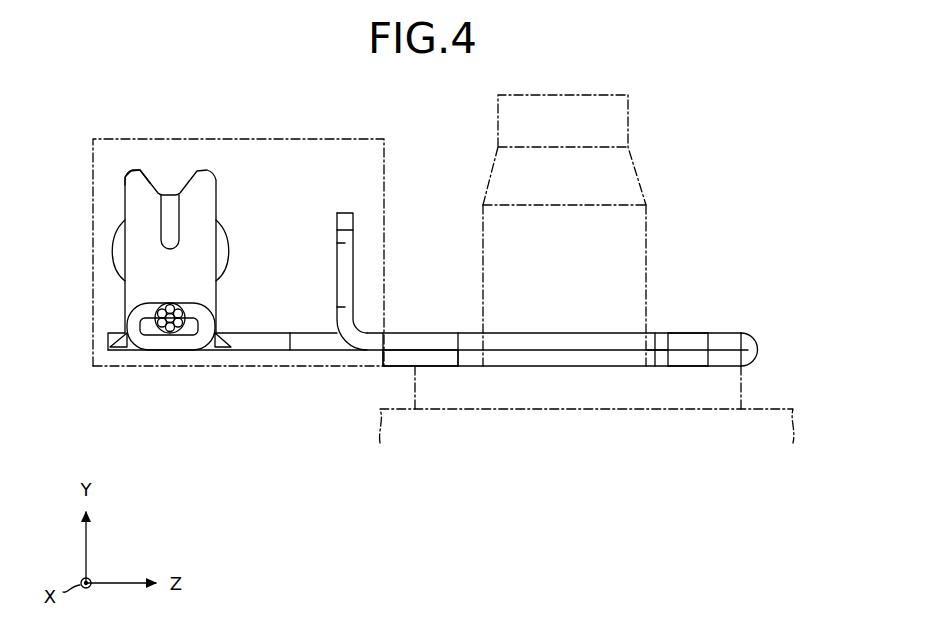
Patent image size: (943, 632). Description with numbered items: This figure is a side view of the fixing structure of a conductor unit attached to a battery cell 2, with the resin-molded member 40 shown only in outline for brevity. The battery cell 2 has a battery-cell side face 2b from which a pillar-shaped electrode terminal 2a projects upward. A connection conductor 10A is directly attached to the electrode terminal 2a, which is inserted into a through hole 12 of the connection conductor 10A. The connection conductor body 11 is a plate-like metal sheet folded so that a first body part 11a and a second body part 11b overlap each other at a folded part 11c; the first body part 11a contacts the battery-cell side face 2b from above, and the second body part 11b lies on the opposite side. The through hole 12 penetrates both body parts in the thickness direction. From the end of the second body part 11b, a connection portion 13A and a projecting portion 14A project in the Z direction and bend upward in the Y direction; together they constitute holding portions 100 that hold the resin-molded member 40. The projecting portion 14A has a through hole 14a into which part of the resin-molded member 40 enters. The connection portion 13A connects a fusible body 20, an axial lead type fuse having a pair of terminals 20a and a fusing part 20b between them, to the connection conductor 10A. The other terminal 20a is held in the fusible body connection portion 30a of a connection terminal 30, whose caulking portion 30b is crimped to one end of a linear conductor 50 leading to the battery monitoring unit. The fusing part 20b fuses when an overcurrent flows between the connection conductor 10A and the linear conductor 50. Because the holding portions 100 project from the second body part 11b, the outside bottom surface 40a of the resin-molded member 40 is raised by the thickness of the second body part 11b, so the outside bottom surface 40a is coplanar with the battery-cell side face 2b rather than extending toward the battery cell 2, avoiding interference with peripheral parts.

The battery cell 2 is at (598, 269).
The electrode terminal 2a is at (628, 130).
The battery-cell side face 2b is at (438, 360).
The connection conductor 10A is at (455, 318).
The connection conductor body 11 is at (600, 300).
The first body part 11a is at (711, 318).
The second body part 11b is at (685, 343).
The folded part 11c is at (757, 350).
The through hole 12 is at (652, 345).
The connection portion 13A is at (262, 340).
The projecting portion 14A is at (392, 228).
The through hole 14a is at (357, 253).
The fusible body 20 is at (141, 214).
The terminal 20a is at (163, 250).
The fusing part 20b is at (120, 250).
The connection terminal 30 is at (141, 214).
The fusible body connection portion 30a is at (137, 185).
The caulking portion 30b is at (138, 318).
The resin-molded member 40 is at (238, 258).
The outside bottom surface 40a is at (210, 370).
The linear conductor 50 is at (158, 340).
The holding portion 100 is at (290, 266).